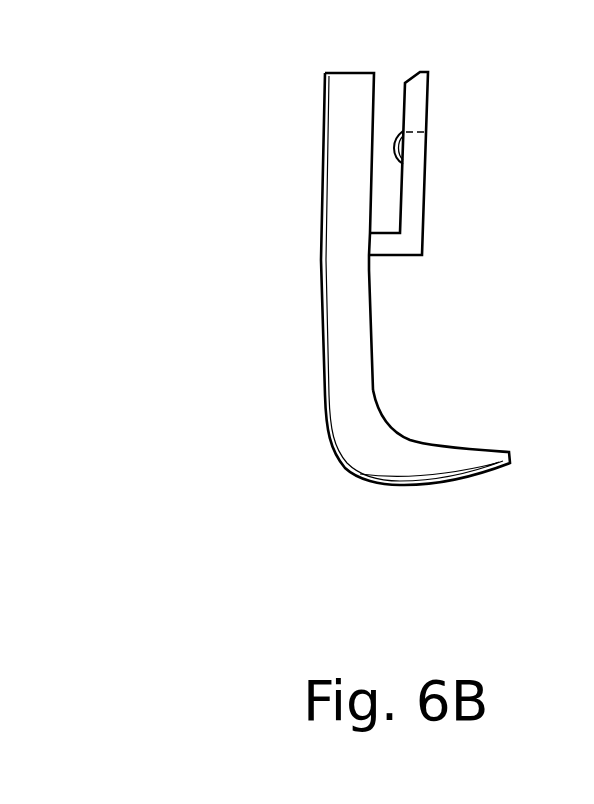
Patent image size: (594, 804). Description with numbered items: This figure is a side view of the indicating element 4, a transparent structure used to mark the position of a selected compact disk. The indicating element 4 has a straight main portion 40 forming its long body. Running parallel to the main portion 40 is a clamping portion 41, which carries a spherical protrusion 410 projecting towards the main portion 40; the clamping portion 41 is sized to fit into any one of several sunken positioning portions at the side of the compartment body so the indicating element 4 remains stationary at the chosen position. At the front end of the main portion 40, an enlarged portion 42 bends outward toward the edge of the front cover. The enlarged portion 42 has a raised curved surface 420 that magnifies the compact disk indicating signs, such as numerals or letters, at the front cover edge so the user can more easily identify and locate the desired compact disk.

The indicating element 4 is at (318, 427).
The main portion 40 is at (340, 337).
The clamping portion 41 is at (415, 183).
The enlarged portion 42 is at (460, 463).
The spherical protrusion 410 is at (398, 147).
The raised curved surface 420 is at (392, 483).